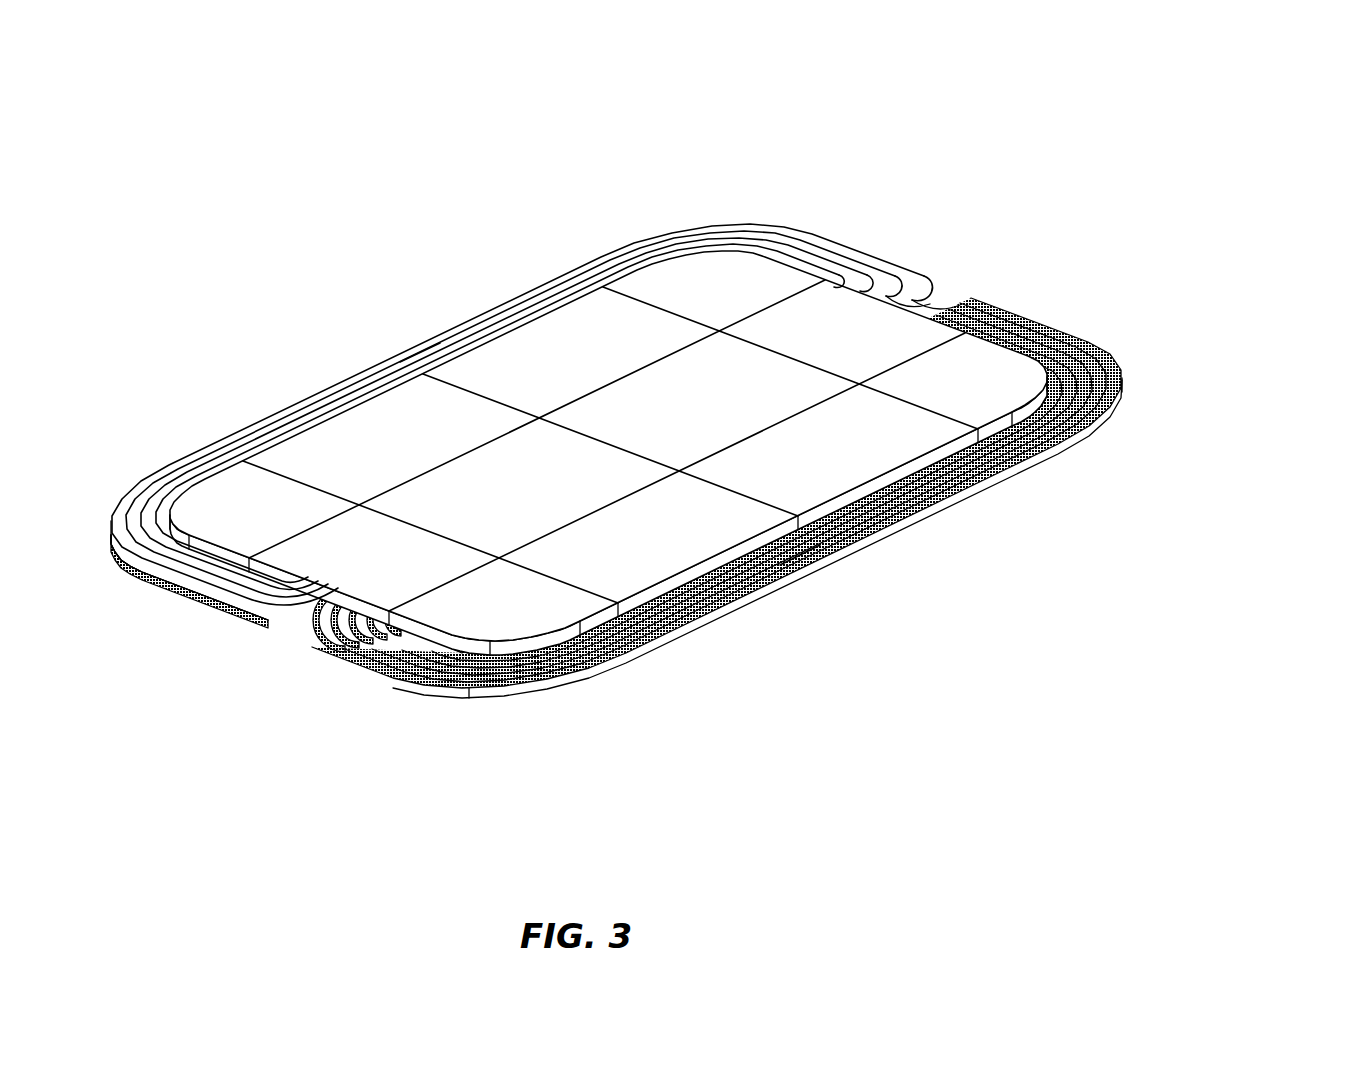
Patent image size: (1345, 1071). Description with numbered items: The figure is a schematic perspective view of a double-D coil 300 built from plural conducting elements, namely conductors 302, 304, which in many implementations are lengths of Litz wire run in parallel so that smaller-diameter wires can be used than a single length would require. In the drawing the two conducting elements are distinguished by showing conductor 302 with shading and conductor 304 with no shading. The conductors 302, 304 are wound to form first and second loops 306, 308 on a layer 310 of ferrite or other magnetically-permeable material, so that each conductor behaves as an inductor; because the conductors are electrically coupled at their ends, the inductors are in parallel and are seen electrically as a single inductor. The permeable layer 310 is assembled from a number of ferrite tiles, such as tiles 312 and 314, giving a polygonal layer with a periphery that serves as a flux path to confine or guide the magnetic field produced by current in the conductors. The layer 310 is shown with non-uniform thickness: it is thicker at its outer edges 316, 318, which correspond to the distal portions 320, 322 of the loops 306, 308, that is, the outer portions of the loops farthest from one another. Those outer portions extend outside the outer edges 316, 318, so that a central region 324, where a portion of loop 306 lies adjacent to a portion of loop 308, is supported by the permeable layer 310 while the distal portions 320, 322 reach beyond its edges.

The double-D coil 300 is at (1256, 72).
The conductor 302 is at (117, 546).
The conductor 304 is at (109, 508).
The first loop 306 is at (797, 226).
The second loop 308 is at (1069, 322).
The layer of magnetically-permeable material 310 is at (556, 490).
The ferrite tile 312 is at (672, 540).
The ferrite tile 314 is at (845, 458).
The outer edge 316 is at (190, 520).
The outer edge 318 is at (597, 620).
The distal portion 320 is at (412, 353).
The distal portion 322 is at (805, 568).
The central region 324 is at (948, 280).